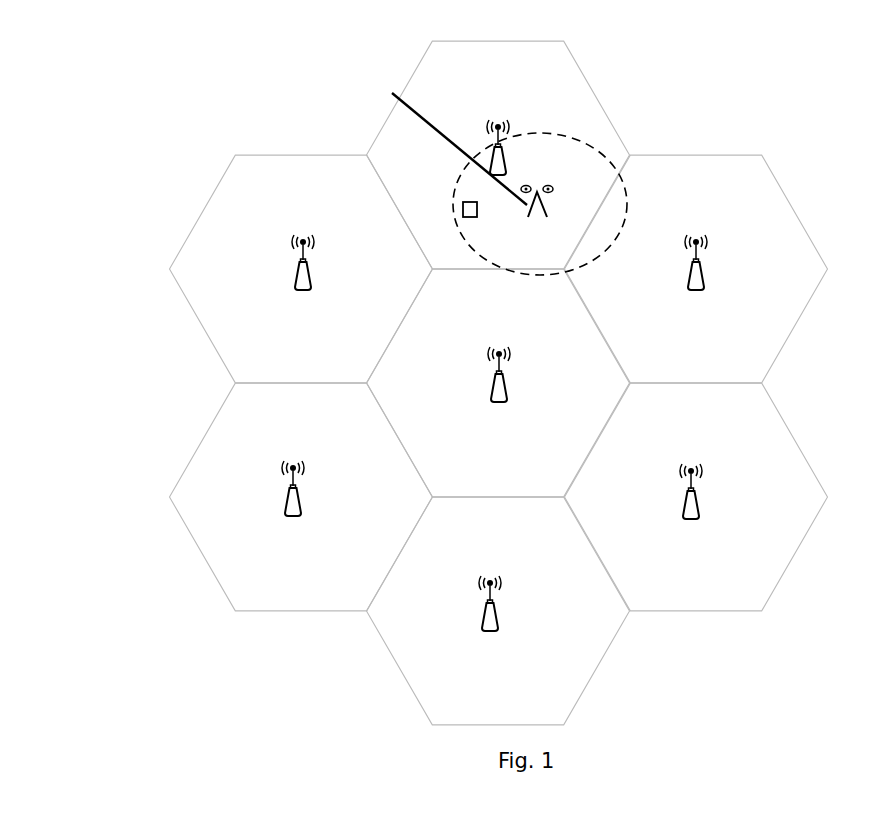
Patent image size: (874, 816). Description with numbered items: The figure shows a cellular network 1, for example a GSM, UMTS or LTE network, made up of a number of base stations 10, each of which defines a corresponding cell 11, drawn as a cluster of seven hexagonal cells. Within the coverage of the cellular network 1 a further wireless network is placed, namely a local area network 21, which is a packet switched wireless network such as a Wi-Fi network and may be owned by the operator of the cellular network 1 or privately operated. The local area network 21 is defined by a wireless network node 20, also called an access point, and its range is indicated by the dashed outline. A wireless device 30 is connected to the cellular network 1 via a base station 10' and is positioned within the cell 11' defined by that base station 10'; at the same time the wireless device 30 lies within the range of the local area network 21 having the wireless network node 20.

The cellular network 1 is at (126, 143).
The base station 10 is at (738, 377).
The base station 10' is at (529, 127).
The cell 11 is at (718, 269).
The cell 11' is at (518, 151).
The wireless network node 20 is at (392, 93).
The local area network 21 is at (600, 153).
The wireless device 30 is at (461, 203).